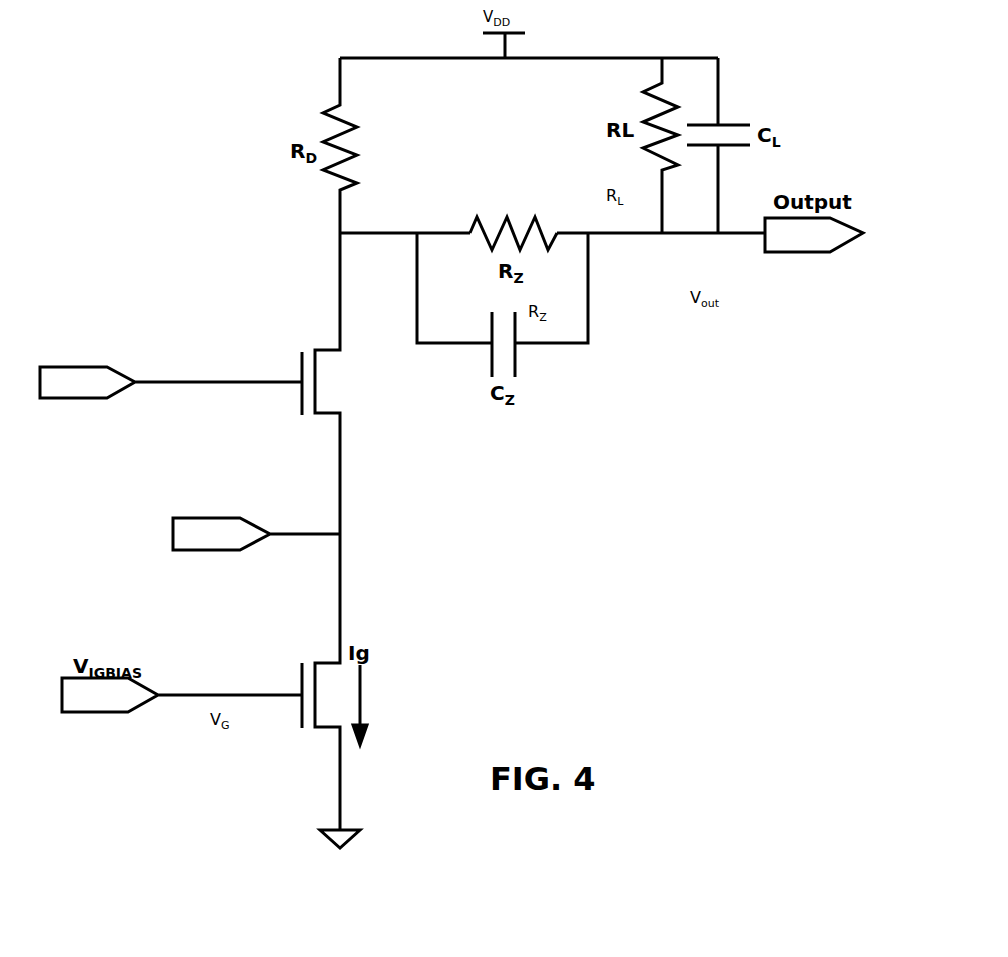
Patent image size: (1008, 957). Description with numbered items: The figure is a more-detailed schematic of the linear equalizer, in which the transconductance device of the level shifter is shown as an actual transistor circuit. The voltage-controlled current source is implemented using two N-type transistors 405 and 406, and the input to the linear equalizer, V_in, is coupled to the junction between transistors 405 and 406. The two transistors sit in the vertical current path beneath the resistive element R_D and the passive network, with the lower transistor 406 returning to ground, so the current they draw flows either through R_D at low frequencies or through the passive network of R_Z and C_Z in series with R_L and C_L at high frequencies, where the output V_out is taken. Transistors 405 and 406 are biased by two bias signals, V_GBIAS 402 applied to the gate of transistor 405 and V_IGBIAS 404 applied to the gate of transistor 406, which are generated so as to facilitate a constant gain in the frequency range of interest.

The bias signal V_GBIAS 402 is at (171, 369).
The bias signal V_IGBIAS 404 is at (256, 553).
The N-type transistor 405 is at (344, 383).
The N-type transistor 406 is at (345, 682).